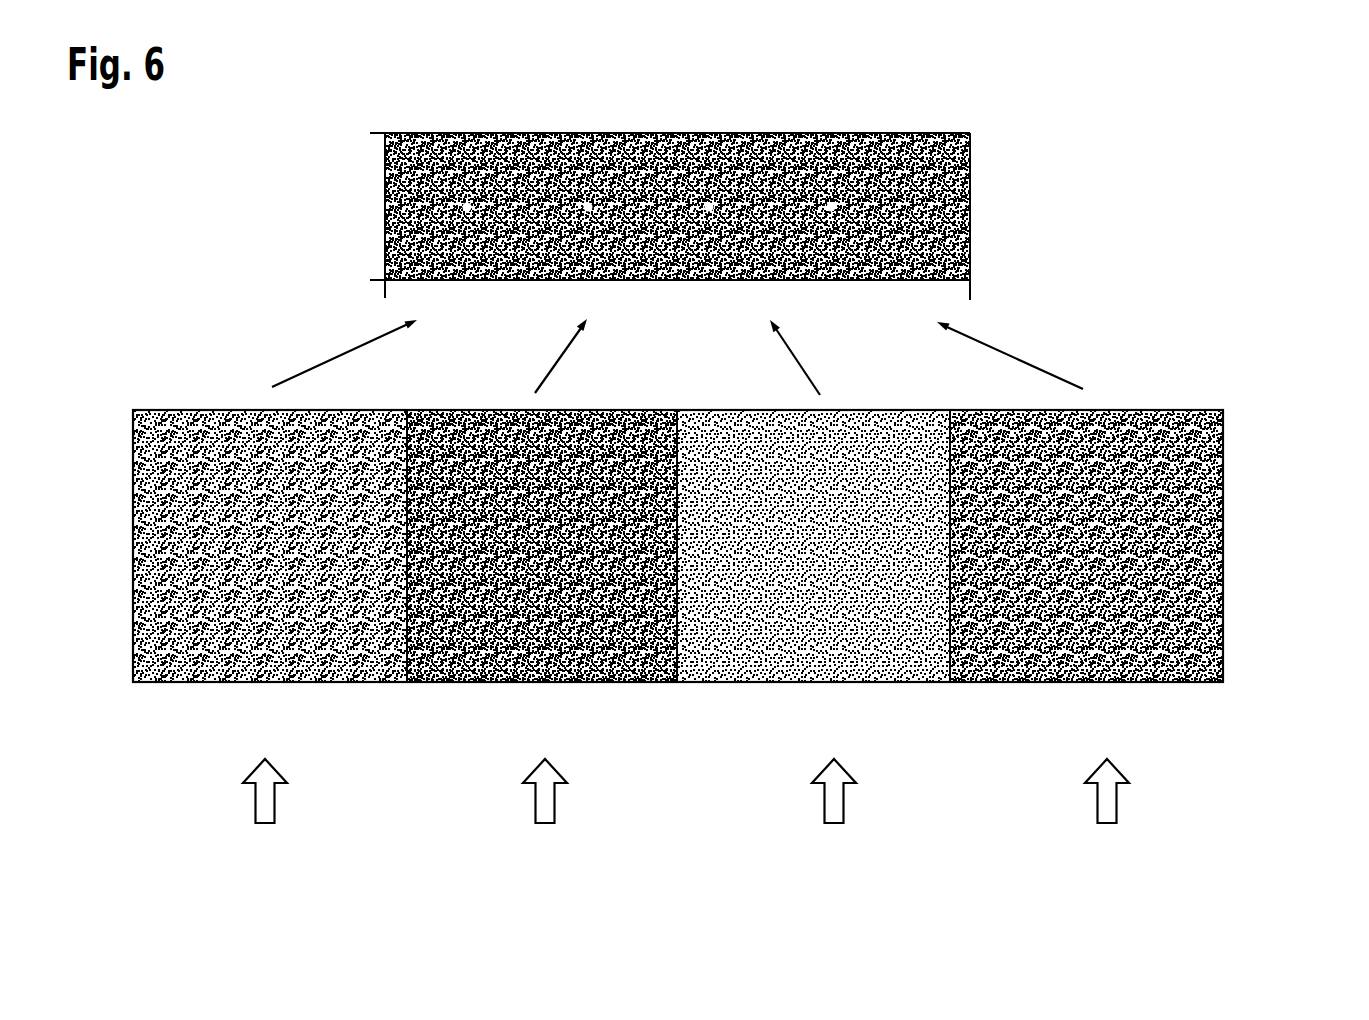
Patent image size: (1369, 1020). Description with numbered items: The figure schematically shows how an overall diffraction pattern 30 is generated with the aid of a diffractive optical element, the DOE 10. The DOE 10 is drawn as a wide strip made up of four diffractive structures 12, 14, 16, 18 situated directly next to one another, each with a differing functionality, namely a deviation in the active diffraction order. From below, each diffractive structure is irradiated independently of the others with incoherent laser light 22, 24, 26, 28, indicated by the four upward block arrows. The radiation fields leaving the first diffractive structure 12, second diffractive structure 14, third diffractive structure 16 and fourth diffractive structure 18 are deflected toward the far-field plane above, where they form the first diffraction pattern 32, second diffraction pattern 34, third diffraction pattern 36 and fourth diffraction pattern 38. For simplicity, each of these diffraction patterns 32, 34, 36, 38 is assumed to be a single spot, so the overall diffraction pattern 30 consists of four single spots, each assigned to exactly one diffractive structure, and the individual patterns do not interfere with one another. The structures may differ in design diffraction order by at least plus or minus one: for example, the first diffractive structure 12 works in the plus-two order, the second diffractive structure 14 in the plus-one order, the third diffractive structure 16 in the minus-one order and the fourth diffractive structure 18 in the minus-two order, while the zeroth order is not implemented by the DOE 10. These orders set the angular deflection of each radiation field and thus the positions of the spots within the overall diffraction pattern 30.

The DOE 10 is at (1252, 414).
The first diffractive structure 12 is at (178, 420).
The second diffractive structure 14 is at (447, 420).
The third diffractive structure 16 is at (905, 420).
The fourth diffractive structure 18 is at (1183, 420).
The incoherent laser light 22 is at (274, 803).
The incoherent laser light 24 is at (554, 803).
The incoherent laser light 26 is at (844, 803).
The incoherent laser light 28 is at (1116, 803).
The overall diffraction pattern 30 is at (985, 137).
The first diffraction pattern 32 is at (467, 202).
The second diffraction pattern 34 is at (588, 202).
The third diffraction pattern 36 is at (709, 202).
The fourth diffraction pattern 38 is at (831, 202).